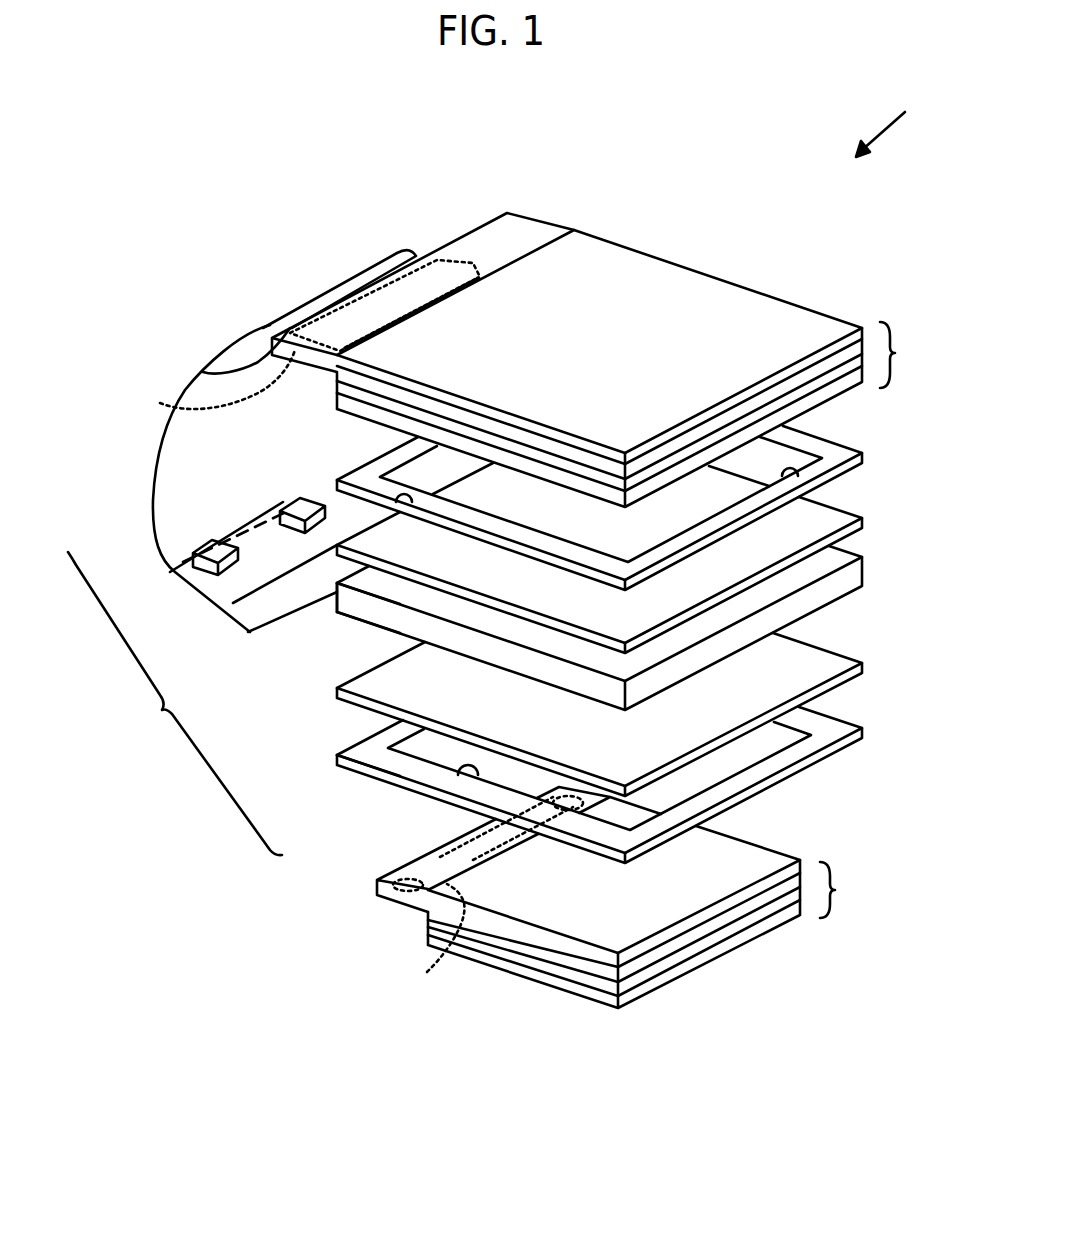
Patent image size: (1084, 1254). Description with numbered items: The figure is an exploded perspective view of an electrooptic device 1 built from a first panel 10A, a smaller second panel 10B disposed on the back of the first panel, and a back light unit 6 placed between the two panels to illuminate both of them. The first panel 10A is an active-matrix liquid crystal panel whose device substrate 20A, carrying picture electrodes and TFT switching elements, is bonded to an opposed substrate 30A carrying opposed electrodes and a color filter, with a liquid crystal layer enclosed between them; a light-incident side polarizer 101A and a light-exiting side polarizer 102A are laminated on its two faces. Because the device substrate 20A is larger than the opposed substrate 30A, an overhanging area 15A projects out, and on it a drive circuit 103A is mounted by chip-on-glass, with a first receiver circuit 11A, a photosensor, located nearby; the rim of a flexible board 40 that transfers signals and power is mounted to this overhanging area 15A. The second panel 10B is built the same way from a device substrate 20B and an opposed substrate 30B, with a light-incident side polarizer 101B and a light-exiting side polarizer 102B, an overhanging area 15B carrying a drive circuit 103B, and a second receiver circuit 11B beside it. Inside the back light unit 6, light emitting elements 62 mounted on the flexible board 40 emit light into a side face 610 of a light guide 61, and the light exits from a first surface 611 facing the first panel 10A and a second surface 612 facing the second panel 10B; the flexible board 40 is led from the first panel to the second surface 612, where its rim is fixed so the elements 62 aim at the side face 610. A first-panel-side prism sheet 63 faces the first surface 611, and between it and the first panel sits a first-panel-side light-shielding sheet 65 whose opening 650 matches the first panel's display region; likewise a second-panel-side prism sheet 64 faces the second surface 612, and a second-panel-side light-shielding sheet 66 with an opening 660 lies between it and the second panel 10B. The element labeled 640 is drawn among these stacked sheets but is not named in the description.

The electrooptic device 1 is at (890, 122).
The first panel 10A is at (530, 335).
The second panel 10B is at (591, 934).
The light-incident side polarizer 101A is at (845, 386).
The light-incident side polarizer 101B is at (762, 855).
The light-exiting side polarizer 102A is at (839, 338).
The light-exiting side polarizer 102B is at (697, 970).
The drive circuit 103A is at (472, 262).
The drive circuit 103B is at (443, 852).
The first receiver circuit 11A is at (206, 382).
The second receiver circuit 11B is at (405, 885).
The overhanging area 15A is at (203, 372).
The overhanging area 15B is at (434, 943).
The device substrate 20A is at (808, 377).
The device substrate 20B is at (544, 943).
The opposed substrate 30A is at (790, 407).
The opposed substrate 30B is at (590, 977).
The flexible board 40 is at (365, 282).
The back light unit 6 is at (175, 703).
The light guide 61 is at (335, 626).
The side face 610 is at (337, 609).
The first surface 611 is at (337, 642).
The second surface 612 is at (386, 637).
The light emitting elements 62 is at (300, 503).
The first-panel-side prism sheet 63 is at (242, 615).
The second-panel-side prism sheet 64 is at (347, 753).
The intermediate plate 640 is at (337, 689).
The first-panel-side light-shielding sheet 65 is at (313, 567).
The opening 650 is at (827, 476).
The second-panel-side light-shielding sheet 66 is at (352, 773).
The opening 660 is at (460, 771).